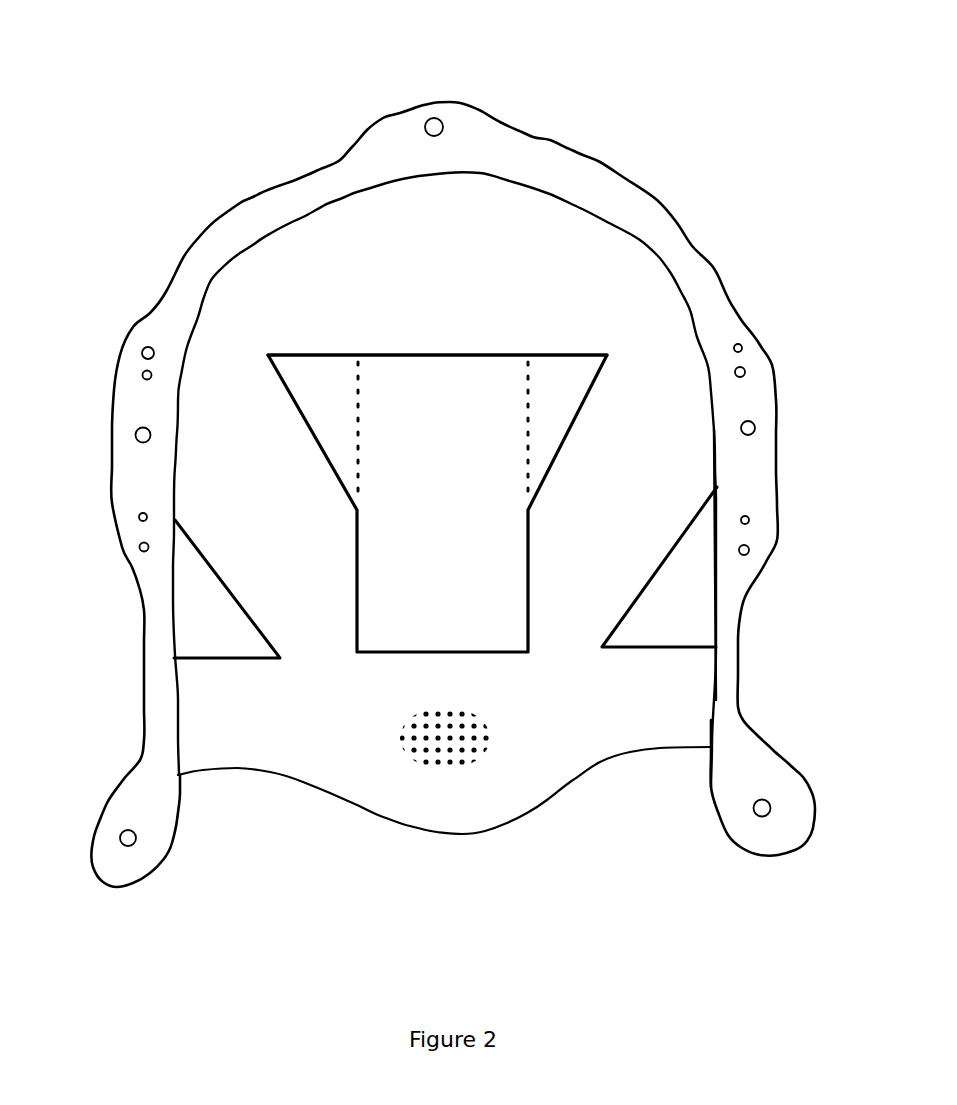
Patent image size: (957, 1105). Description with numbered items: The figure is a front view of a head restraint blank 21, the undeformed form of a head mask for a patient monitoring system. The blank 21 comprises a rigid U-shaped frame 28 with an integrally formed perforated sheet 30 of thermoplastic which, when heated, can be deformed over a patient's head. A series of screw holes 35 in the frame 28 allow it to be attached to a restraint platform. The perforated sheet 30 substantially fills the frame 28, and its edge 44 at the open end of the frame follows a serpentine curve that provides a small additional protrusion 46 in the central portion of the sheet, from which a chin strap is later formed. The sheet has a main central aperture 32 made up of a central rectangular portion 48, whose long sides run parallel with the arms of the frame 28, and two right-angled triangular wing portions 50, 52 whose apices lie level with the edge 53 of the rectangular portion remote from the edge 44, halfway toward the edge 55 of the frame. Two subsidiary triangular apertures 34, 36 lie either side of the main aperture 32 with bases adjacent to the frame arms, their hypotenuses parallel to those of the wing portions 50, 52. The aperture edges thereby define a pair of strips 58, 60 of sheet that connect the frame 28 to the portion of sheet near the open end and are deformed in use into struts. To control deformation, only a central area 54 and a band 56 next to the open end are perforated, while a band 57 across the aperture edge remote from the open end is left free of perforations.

The head restraint blank 21 is at (662, 151).
The U-shaped frame 28 is at (220, 213).
The perforated sheet 30 is at (707, 383).
The main central aperture 32 is at (493, 372).
The subsidiary triangular aperture 34 is at (185, 615).
The screw holes 35 is at (430, 117).
The subsidiary triangular aperture 36 is at (690, 610).
The edge of the perforated sheet 44 is at (467, 835).
The protrusion 46 is at (433, 800).
The central rectangular portion 48 is at (437, 503).
The wing portion 50 is at (325, 292).
The wing portion 52 is at (560, 373).
The edge of the central rectangular portion 53 is at (458, 354).
The central area 54 is at (470, 740).
The edge of the U-shaped frame 55 is at (203, 303).
The band 56 is at (640, 720).
The band 57 is at (653, 320).
The strip 58 is at (266, 496).
The strip 60 is at (624, 499).